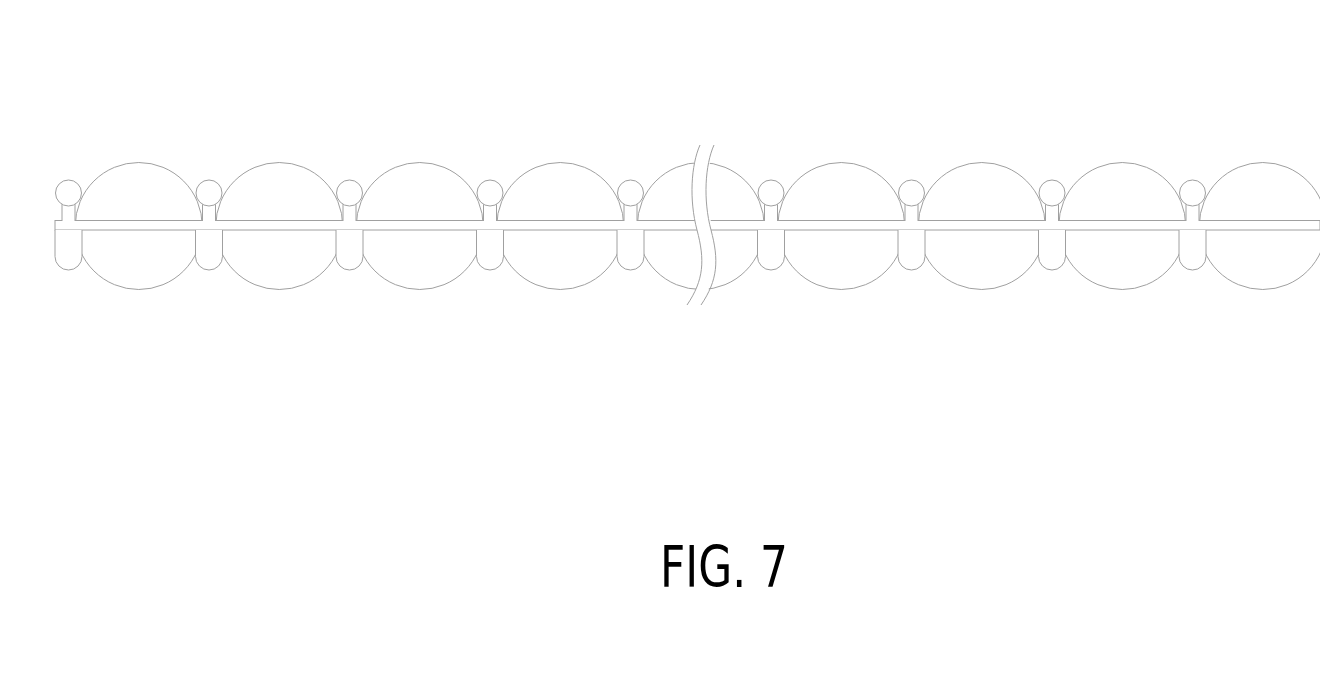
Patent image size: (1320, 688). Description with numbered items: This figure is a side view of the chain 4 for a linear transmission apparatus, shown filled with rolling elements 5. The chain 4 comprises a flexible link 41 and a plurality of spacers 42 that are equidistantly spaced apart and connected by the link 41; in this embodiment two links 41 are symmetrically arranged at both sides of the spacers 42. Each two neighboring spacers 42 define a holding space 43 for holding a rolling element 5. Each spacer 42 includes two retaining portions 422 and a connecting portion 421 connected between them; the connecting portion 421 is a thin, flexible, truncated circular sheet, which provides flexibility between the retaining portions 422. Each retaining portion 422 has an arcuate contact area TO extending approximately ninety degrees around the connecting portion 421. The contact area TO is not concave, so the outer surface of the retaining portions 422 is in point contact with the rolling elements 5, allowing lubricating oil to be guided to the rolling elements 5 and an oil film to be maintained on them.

The chain 4 is at (687, 219).
The flexible link 41 is at (153, 223).
The spacer 42 is at (495, 183).
The connecting portion 421 is at (352, 213).
The retaining portion 422 is at (415, 239).
The holding space 43 is at (618, 188).
The rolling element 5 is at (410, 162).
The arcuate contact area TO is at (515, 166).